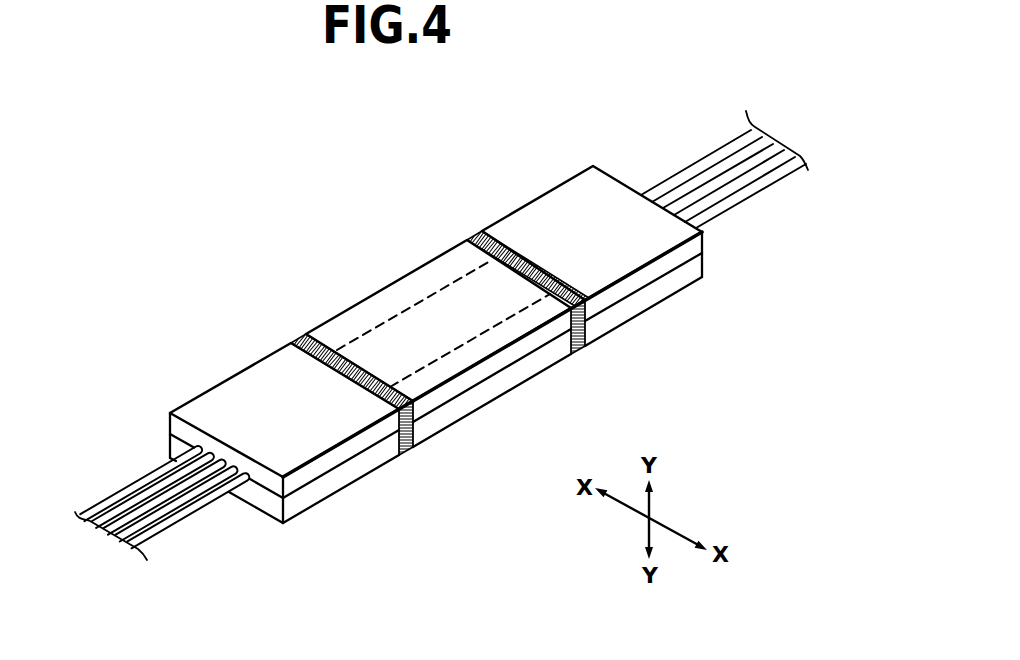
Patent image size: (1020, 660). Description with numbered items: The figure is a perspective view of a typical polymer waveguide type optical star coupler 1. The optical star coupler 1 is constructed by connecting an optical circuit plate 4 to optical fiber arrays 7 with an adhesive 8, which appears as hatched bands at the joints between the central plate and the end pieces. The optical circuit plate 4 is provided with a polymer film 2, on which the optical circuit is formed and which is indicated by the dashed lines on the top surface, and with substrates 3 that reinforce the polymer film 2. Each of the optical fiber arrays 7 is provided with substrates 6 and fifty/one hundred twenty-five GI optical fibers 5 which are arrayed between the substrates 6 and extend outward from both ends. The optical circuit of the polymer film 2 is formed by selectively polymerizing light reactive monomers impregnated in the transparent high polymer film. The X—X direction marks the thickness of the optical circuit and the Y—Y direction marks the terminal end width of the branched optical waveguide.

The optical star coupler 1 is at (441, 339).
The polymer film 2 is at (423, 355).
The substrates 3 is at (493, 388).
The optical circuit plate 4 is at (393, 293).
The optical fibers 5 is at (306, 244).
The substrates 6 is at (323, 488).
The optical fiber arrays 7 is at (240, 390).
The adhesive 8 is at (295, 347).